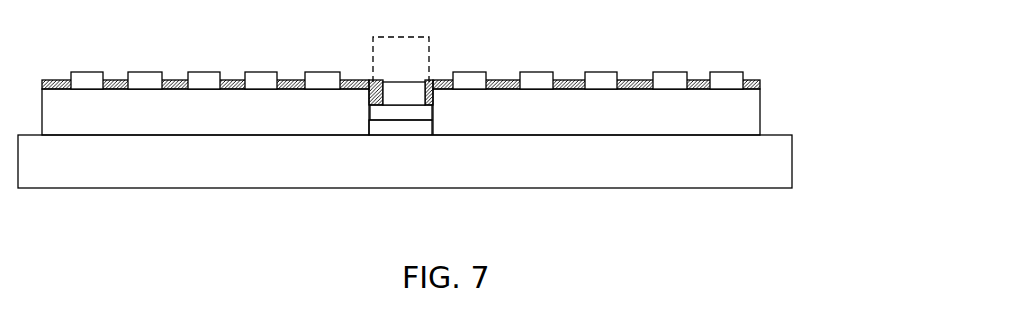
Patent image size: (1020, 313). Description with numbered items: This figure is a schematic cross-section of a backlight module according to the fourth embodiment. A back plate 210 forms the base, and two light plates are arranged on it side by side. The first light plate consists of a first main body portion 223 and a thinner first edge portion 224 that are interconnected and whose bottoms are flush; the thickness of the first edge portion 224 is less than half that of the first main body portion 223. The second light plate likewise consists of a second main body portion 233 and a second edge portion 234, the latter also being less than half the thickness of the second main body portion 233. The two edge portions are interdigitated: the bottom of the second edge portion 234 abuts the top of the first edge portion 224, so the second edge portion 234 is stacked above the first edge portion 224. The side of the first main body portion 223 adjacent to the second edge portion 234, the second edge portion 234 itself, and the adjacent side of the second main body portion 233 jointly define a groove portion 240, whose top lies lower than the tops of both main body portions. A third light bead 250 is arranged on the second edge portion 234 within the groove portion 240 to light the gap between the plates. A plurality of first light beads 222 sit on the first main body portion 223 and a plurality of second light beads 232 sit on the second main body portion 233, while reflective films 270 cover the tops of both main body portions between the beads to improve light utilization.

The back plate 210 is at (773, 162).
The first light beads 222 is at (89, 81).
The first main body portion 223 is at (192, 125).
The first edge portion 224 is at (390, 127).
The second light beads 232 is at (603, 80).
The second main body portion 233 is at (615, 115).
The second edge portion 234 is at (423, 109).
The groove portion 240 is at (430, 47).
The third light bead 250 is at (399, 92).
The reflective films 270 is at (173, 80).